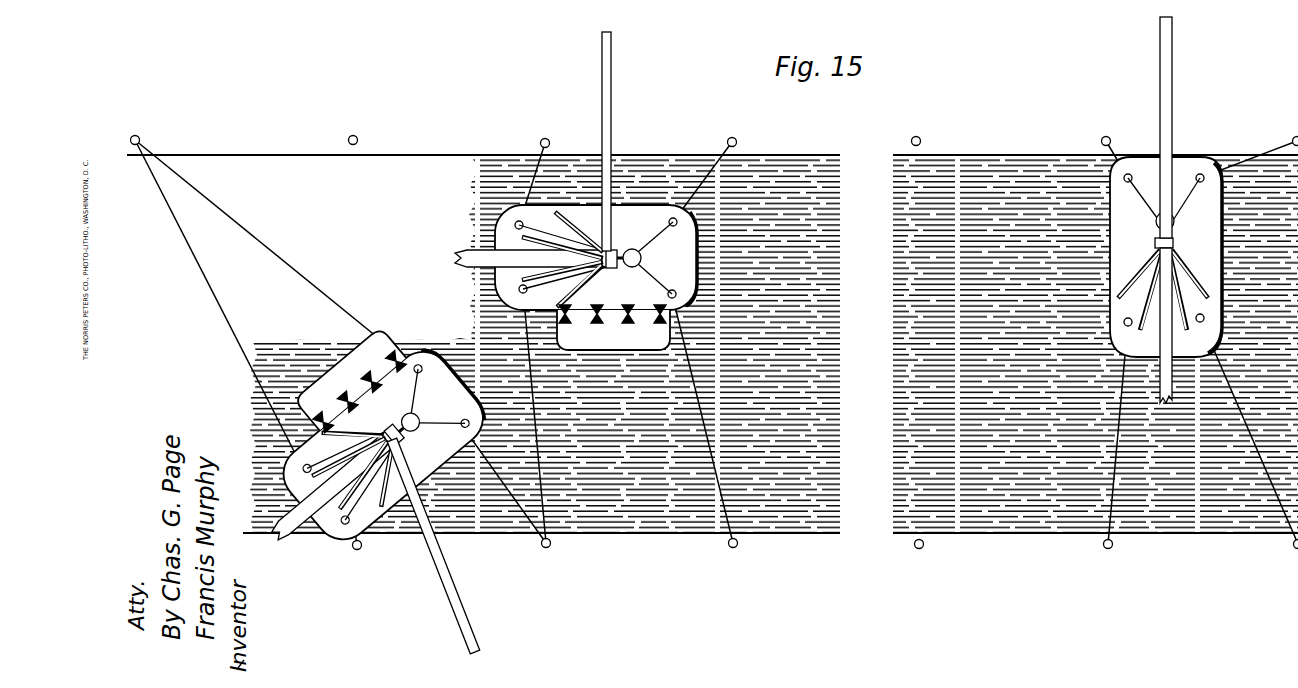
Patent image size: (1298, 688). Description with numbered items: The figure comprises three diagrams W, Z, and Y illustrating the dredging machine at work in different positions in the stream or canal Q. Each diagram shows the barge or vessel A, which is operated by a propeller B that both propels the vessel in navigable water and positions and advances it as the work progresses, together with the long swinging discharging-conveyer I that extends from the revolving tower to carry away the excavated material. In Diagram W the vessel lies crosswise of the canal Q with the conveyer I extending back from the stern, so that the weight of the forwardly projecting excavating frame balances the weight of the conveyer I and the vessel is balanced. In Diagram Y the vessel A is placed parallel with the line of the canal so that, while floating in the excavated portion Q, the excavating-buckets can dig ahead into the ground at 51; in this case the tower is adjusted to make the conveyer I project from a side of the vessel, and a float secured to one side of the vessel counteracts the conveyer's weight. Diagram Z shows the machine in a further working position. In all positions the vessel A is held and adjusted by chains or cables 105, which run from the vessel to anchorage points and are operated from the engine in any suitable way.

The chains or cables 105 is at (276, 253).
The ground 51 is at (483, 344).
The barge or vessel A is at (613, 327).
The propeller B is at (351, 380).
The discharging-conveyer I is at (602, 100).
The diagram Y is at (576, 193).
The diagram Z is at (367, 476).
The diagram W is at (1178, 215).
The stream or canal Q is at (1090, 344).